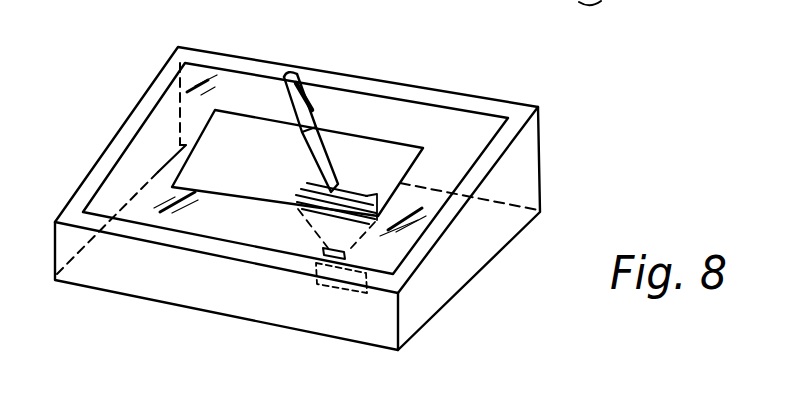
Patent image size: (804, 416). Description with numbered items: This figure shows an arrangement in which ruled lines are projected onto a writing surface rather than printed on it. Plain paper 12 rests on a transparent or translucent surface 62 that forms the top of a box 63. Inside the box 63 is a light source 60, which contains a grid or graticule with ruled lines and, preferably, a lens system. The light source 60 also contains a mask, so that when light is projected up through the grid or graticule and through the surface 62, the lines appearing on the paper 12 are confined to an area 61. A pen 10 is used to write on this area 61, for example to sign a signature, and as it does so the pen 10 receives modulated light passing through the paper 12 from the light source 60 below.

The pen 10 is at (293, 103).
The paper 12 is at (351, 145).
The light source 60 is at (324, 293).
The area 61 is at (372, 187).
The transparent or translucent surface 62 is at (131, 178).
The box 63 is at (452, 272).